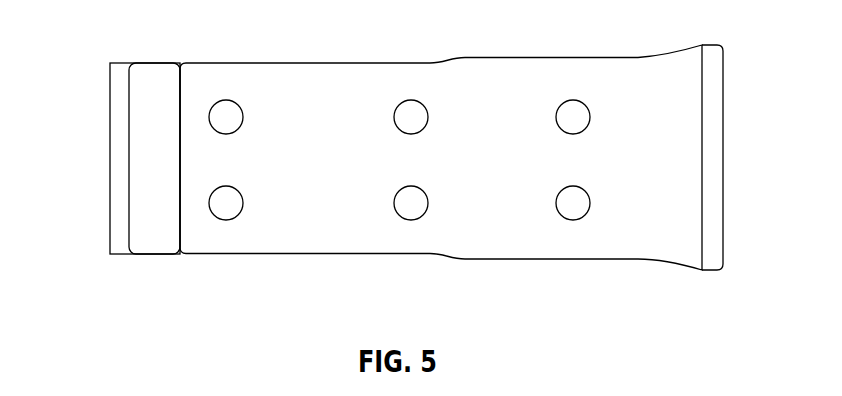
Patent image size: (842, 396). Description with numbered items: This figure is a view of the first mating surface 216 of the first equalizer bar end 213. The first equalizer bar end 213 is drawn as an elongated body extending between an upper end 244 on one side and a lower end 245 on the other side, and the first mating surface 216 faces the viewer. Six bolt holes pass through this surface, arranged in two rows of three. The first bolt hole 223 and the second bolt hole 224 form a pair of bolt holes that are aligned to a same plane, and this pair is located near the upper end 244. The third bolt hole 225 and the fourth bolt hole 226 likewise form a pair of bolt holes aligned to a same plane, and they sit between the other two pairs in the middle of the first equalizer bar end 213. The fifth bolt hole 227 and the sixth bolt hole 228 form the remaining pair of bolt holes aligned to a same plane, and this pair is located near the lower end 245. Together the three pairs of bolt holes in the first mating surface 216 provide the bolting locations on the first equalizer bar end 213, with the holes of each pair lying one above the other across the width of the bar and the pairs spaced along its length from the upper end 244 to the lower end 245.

The first equalizer bar end 213 is at (313, 63).
The first mating surface 216 is at (340, 230).
The first bolt hole 223 is at (573, 100).
The second bolt hole 224 is at (573, 220).
The third bolt hole 225 is at (411, 100).
The fourth bolt hole 226 is at (411, 220).
The fifth bolt hole 227 is at (226, 100).
The sixth bolt hole 228 is at (226, 220).
The upper end 244 is at (702, 153).
The lower end 245 is at (179, 158).